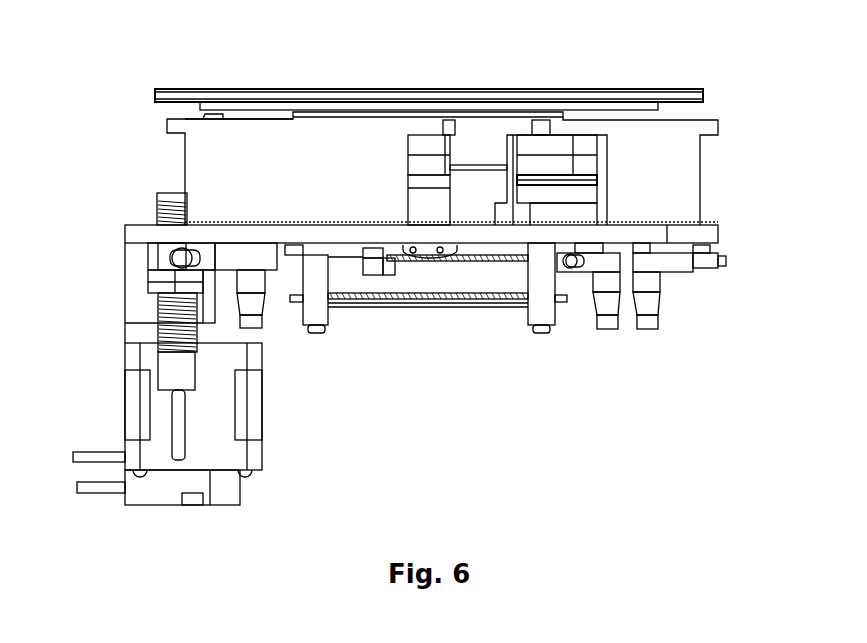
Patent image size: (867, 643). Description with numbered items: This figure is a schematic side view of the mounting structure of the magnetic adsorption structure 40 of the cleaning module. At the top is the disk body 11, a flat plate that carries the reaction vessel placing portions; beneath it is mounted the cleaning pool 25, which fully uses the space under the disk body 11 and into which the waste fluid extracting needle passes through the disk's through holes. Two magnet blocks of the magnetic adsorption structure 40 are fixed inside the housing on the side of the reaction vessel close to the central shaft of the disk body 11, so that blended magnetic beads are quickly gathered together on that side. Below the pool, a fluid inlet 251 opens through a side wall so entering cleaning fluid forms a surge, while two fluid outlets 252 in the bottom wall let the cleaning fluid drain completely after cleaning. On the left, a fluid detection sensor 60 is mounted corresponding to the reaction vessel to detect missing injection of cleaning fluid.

The disk body 11 is at (432, 90).
The cleaning pool 25 is at (283, 168).
The magnetic adsorption structure 40 is at (420, 167).
The fluid detection sensor 60 is at (157, 342).
The fluid inlet 251 is at (712, 265).
The fluid outlet 252 is at (594, 315).